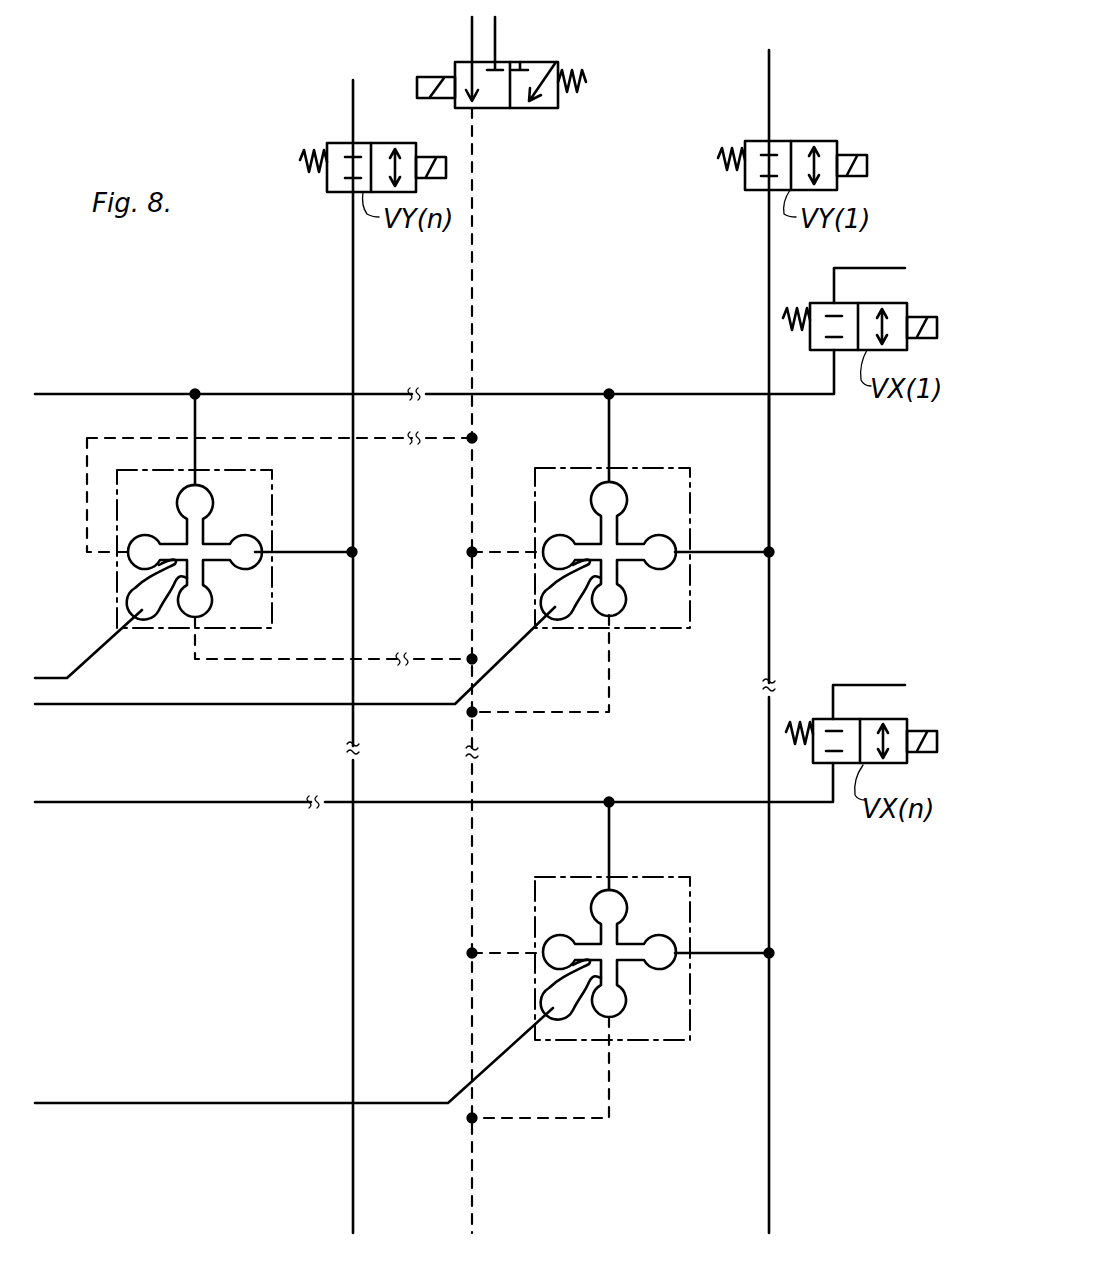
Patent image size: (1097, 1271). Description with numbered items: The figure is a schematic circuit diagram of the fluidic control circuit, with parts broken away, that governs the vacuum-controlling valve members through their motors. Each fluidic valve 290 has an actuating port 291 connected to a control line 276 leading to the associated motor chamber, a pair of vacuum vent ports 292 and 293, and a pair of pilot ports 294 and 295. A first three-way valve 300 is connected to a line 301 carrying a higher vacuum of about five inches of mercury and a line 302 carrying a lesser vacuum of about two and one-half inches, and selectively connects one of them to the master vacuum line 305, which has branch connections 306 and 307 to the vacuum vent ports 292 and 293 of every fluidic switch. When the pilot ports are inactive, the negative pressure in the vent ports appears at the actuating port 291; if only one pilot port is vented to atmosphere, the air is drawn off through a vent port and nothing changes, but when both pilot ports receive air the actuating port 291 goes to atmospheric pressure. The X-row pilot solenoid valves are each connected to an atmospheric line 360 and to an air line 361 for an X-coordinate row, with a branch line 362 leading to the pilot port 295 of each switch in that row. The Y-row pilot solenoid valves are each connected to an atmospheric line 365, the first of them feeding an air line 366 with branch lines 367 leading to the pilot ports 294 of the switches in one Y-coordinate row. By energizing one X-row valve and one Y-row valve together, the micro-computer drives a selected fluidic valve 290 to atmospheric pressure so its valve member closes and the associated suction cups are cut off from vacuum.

The control line 276 is at (54, 678).
The fluidic valve 290 is at (257, 517).
The actuating port 291 is at (573, 608).
The vacuum vent port 292 is at (618, 608).
The vacuum vent port 293 is at (560, 536).
The pilot port 294 is at (658, 560).
The pilot port 295 is at (200, 503).
The 3-way valve 300 is at (538, 110).
The line 301 is at (471, 31).
The line 302 is at (497, 42).
The master vacuum line 305 is at (477, 308).
The branch connection 306 is at (240, 440).
The branch connection 307 is at (250, 672).
The atmospheric line 360 is at (872, 267).
The air line 361 is at (652, 393).
The branch line 362 is at (194, 423).
The atmospheric line 365 is at (352, 98).
The air line 366 is at (771, 450).
The branch line 367 is at (724, 547).